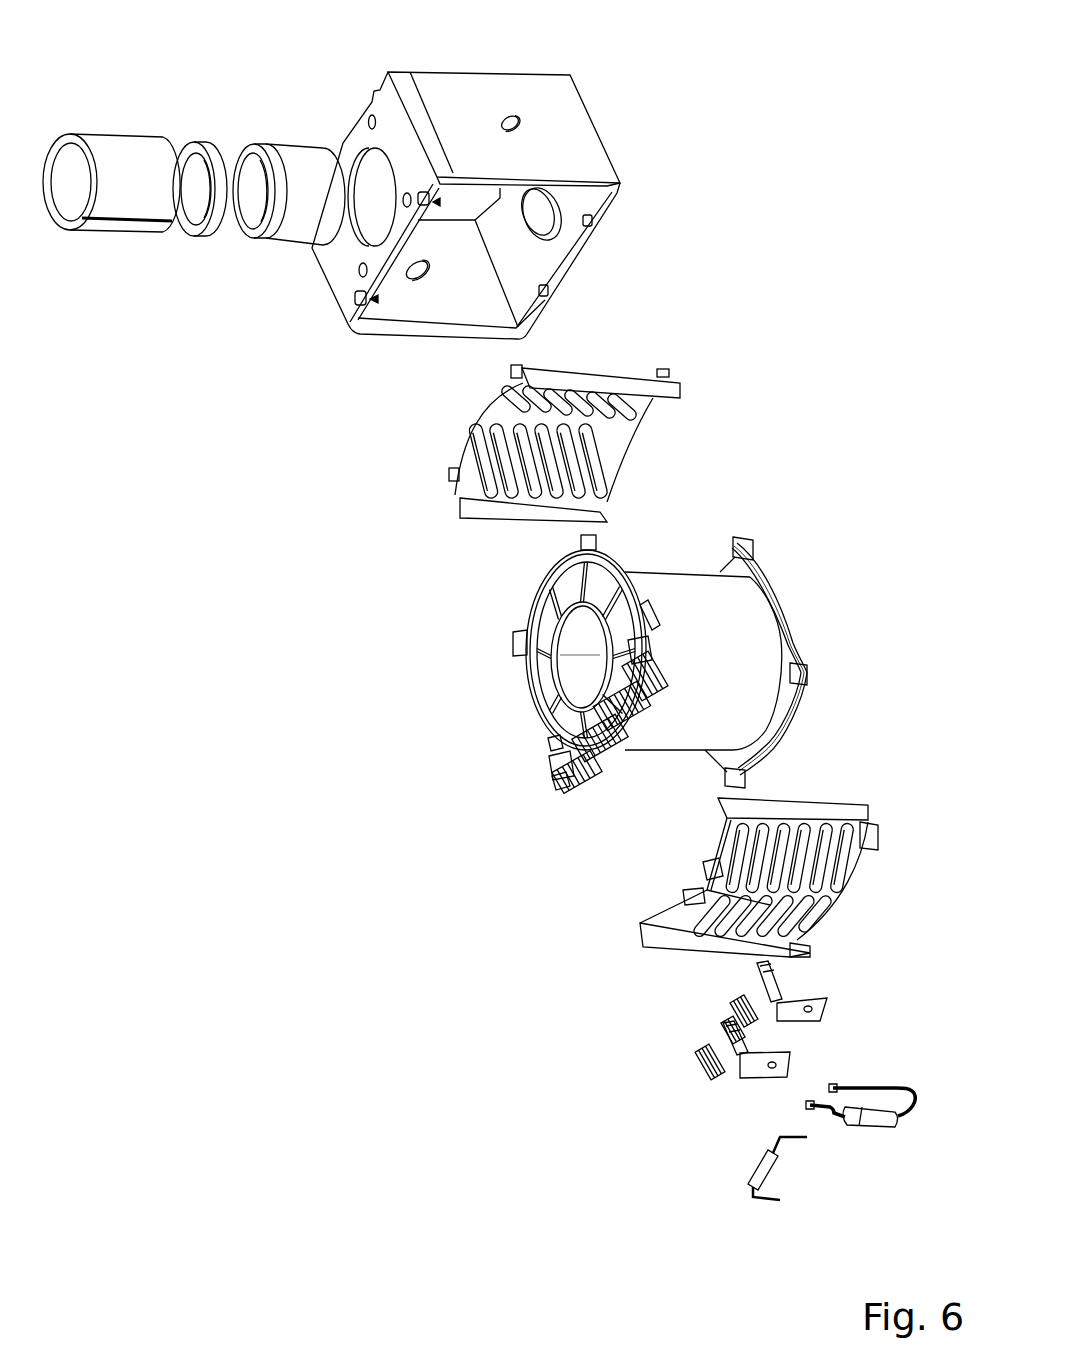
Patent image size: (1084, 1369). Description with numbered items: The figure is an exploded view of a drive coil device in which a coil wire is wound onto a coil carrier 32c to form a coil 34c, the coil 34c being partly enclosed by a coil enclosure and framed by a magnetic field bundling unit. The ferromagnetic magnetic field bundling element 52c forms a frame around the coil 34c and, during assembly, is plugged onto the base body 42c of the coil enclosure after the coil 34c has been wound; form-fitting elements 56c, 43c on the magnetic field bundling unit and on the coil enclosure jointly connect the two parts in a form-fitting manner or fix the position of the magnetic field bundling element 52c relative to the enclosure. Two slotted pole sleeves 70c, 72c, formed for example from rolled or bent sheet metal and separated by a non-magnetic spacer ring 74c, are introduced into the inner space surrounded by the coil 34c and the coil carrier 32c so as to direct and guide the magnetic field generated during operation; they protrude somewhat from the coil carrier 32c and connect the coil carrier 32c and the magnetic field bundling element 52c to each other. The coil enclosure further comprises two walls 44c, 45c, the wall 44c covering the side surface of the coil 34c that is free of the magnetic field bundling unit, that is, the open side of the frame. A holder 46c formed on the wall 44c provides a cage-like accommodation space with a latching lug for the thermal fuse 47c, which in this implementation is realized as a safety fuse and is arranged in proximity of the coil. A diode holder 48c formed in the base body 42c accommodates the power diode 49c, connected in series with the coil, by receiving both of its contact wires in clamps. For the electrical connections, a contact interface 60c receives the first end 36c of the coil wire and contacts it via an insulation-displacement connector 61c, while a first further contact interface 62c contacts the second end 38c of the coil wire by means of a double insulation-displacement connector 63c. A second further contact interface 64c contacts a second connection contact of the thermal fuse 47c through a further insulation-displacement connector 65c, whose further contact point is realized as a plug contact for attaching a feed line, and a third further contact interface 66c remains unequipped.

The pole sleeve 72c is at (128, 176).
The non-magnetic spacer ring 74c is at (225, 177).
The pole sleeve 70c is at (313, 177).
The magnetic field bundling element 52c is at (547, 125).
The form-fitting element 56c is at (378, 299).
The wall 45c is at (497, 413).
The end of the coil wire 36c is at (630, 618).
The form-fitting element 43c is at (633, 623).
The coil 34c is at (690, 630).
The base body 42c is at (530, 617).
The coil carrier 32c is at (560, 664).
The contact interface 60c is at (600, 686).
The third contact interface 66c is at (562, 716).
The second contact interface 64c is at (556, 743).
The second end of the coil wire 38c is at (568, 758).
The first contact interface 62c is at (575, 774).
The diode holder 48c is at (618, 745).
The holder 46c is at (683, 905).
The wall 44c is at (842, 827).
The insulation-displacement connector 61c is at (807, 997).
The further insulation-displacement connector 65c is at (770, 1052).
The double insulation-displacement connector 63c is at (703, 1068).
The power diode 49c is at (760, 1170).
The thermal fuse 47c is at (873, 1117).